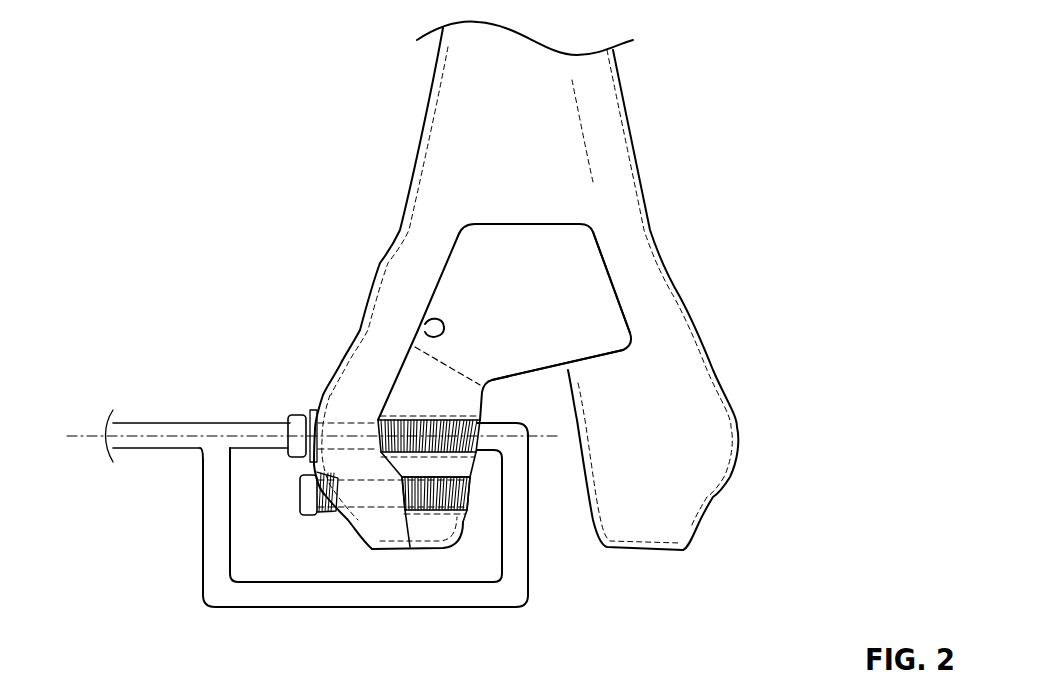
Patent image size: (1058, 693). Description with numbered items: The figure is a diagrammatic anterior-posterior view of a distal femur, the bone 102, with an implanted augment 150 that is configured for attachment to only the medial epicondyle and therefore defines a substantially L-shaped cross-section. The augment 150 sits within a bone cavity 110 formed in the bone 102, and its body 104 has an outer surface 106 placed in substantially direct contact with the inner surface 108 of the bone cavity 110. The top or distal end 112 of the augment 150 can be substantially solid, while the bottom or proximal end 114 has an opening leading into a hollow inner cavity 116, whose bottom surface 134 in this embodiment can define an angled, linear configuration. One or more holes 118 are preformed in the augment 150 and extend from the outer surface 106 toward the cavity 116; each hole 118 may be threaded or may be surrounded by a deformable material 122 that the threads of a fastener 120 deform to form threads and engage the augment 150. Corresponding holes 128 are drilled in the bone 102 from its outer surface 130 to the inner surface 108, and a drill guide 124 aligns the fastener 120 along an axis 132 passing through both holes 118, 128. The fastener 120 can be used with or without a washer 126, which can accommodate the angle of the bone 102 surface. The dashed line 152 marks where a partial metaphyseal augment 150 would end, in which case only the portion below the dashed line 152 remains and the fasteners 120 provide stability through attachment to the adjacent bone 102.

The bone 102 is at (624, 96).
The body 104 is at (473, 250).
The outer surface 106 is at (437, 300).
The inner surface 108 is at (425, 332).
The bone cavity 110 is at (623, 297).
The distal end 112 is at (512, 221).
The proximal end 114 is at (429, 562).
The inner cavity 116 is at (553, 480).
The holes 118 is at (430, 512).
The fastener 120 is at (295, 416).
The deformable material 122 is at (443, 413).
The drill guide 124 is at (203, 552).
The washer 126 is at (342, 520).
The holes 128 is at (320, 477).
The outer surface 130 is at (430, 97).
The axis 132 is at (85, 433).
The bottom surface 134 is at (540, 372).
The augment 150 is at (575, 257).
The dashed line 152 is at (433, 362).